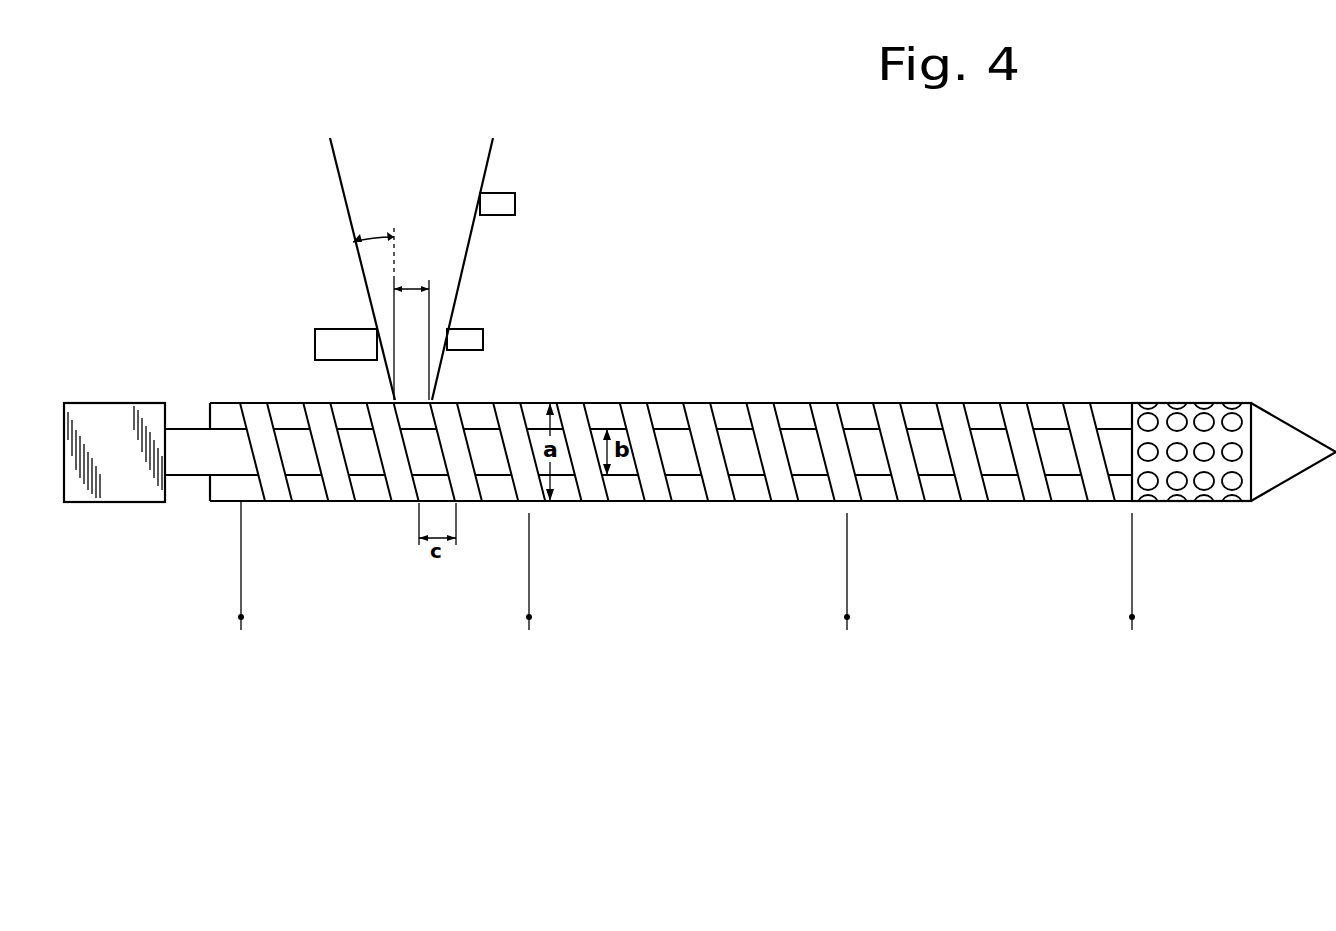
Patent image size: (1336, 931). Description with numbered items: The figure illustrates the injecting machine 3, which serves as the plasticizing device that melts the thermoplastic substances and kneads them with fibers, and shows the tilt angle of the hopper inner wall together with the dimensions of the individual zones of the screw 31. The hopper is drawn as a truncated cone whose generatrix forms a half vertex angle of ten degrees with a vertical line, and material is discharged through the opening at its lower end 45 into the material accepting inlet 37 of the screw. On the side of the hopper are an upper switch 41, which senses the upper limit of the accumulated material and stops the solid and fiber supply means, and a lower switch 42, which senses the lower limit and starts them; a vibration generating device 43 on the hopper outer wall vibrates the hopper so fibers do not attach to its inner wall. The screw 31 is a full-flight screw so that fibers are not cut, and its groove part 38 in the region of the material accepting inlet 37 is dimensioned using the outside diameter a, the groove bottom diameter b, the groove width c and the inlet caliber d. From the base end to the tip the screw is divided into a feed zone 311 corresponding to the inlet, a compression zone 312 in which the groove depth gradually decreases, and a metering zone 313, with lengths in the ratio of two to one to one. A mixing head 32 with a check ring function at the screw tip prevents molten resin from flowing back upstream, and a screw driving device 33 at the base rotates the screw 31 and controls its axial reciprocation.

The injecting machine 3 is at (787, 387).
The screw 31 is at (860, 433).
The mixing head 32 is at (1163, 413).
The screw driving device 33 is at (118, 420).
The material accepting inlet 37 is at (415, 403).
The groove part 38 is at (663, 415).
The upper switch 41 is at (515, 205).
The lower switch 42 is at (483, 341).
The vibration generating device 43 is at (315, 340).
The lower end 45 is at (432, 397).
The feed zone 311 is at (529, 617).
The compression zone 312 is at (847, 617).
The metering zone 313 is at (1132, 617).